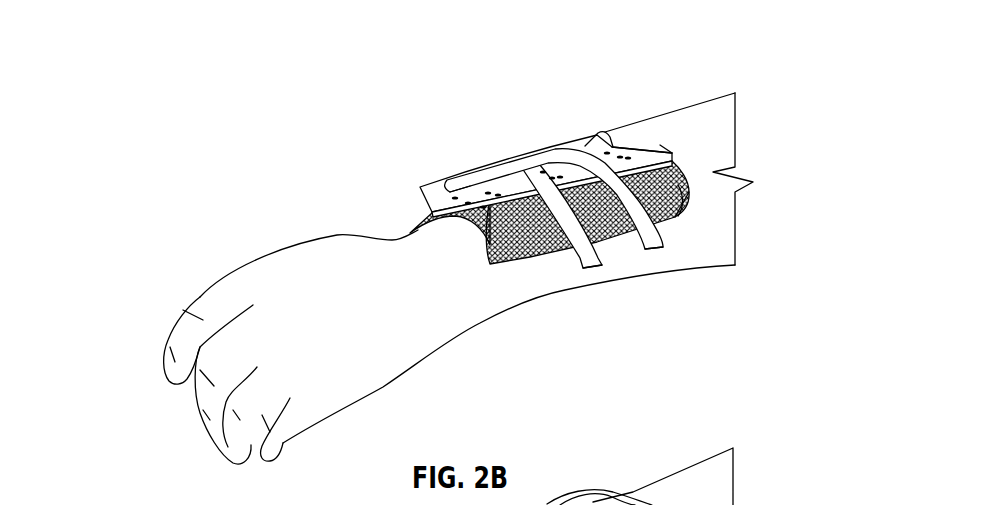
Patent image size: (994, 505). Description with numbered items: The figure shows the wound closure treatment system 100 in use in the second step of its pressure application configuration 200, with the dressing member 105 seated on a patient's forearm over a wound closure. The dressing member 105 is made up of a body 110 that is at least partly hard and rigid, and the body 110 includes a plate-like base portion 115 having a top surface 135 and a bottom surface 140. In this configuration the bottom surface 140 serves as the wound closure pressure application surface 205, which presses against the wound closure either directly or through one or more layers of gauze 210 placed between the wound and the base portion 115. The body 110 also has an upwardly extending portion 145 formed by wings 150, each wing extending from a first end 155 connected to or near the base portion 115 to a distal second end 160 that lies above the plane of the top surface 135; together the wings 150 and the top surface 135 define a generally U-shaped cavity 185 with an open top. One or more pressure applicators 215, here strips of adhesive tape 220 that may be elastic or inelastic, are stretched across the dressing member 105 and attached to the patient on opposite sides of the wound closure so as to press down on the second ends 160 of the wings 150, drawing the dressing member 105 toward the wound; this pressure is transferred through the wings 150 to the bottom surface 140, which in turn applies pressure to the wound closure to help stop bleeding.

The wound closure treatment system 100 is at (652, 12).
The dressing member 105 is at (688, 43).
The body 110 is at (727, 78).
The base portion 115 is at (630, 147).
The top surface 135 is at (540, 177).
The bottom surface 140 is at (443, 222).
The upwardly extending portion 145 is at (413, 165).
The wings 150 is at (565, 128).
The first end 155 is at (467, 190).
The second end 160 is at (583, 133).
The space or cavity 185 is at (650, 147).
The pressure application configuration 200 is at (153, 127).
The wound closure pressure application surface 205 is at (465, 222).
The gauze 210 is at (693, 208).
The pressure applicators 215 is at (595, 343).
The strips of adhesive tape 220 is at (590, 270).